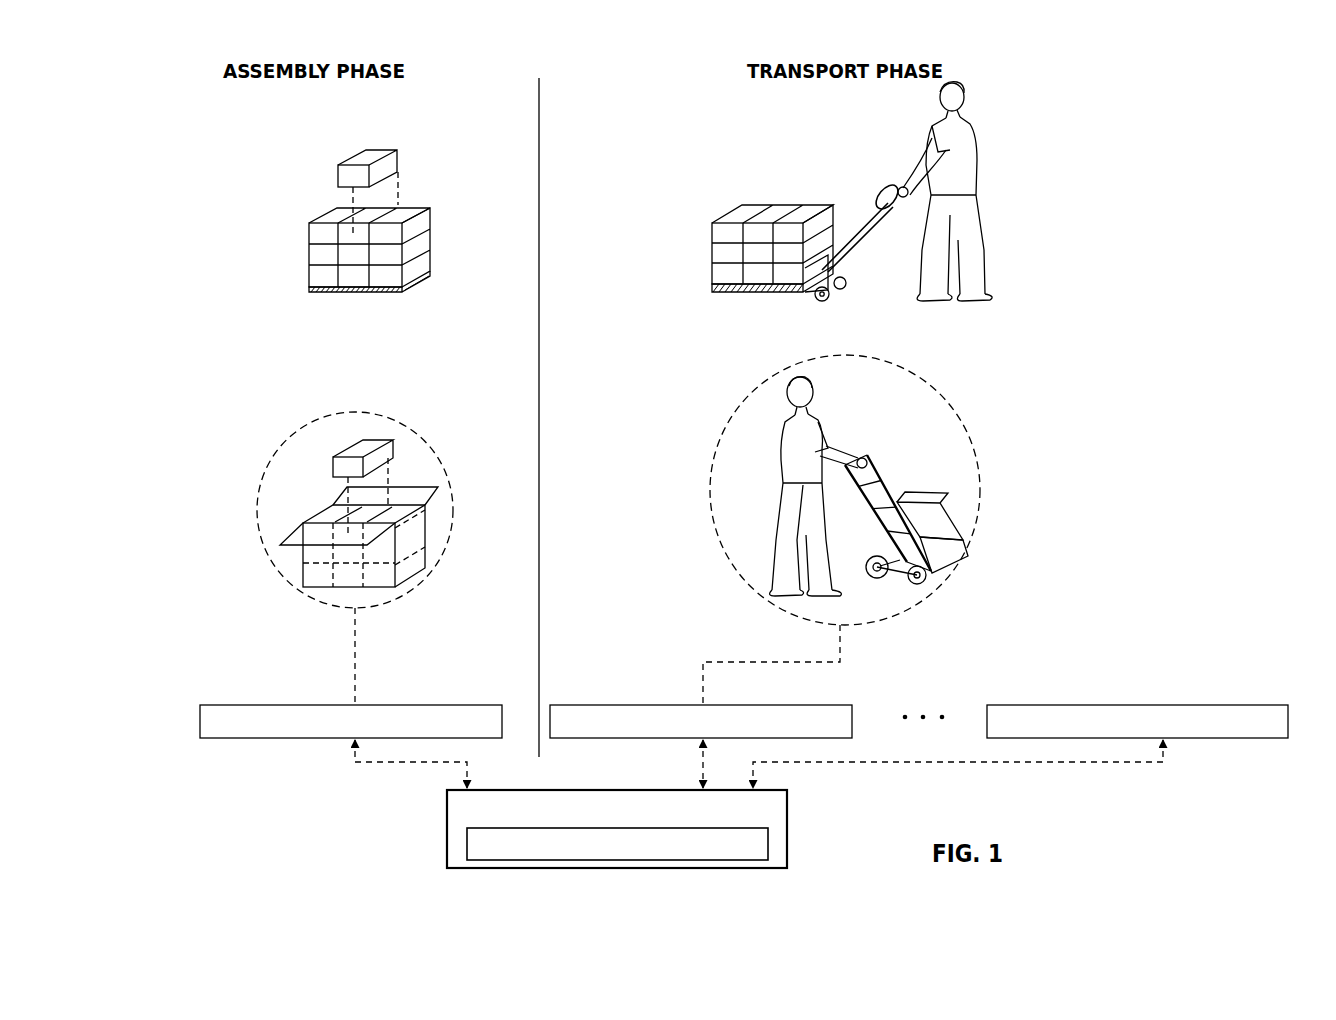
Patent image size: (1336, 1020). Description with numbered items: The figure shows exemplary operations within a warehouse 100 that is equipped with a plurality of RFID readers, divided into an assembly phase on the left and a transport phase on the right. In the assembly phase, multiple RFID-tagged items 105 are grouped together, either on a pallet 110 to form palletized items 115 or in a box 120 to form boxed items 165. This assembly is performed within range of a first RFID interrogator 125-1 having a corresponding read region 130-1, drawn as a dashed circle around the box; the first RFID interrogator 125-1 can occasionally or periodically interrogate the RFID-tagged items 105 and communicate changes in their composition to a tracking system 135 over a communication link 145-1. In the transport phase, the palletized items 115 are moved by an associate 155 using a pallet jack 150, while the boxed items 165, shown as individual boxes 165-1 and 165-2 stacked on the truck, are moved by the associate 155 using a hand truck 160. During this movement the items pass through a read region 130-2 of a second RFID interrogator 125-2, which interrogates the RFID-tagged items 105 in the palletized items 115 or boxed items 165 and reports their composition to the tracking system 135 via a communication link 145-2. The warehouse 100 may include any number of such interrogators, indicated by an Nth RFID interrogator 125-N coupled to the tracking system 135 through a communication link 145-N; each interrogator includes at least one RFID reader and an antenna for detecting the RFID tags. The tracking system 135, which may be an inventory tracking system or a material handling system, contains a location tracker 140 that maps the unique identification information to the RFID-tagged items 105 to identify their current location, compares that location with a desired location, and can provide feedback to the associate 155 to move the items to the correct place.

The warehouse 100 is at (1118, 86).
The RFID-tagged items 105 is at (263, 580).
The pallet 110 is at (372, 293).
The palletized items 115 is at (441, 207).
The box 120 is at (320, 588).
The first RFID interrogator 125-1 is at (490, 732).
The second RFID interrogator 125-2 is at (838, 732).
The RFID interrogator 125-N is at (1277, 732).
The read region 130-1 is at (420, 583).
The read region 130-2 is at (979, 492).
The tracking system 135 is at (778, 822).
The location tracker 140 is at (742, 857).
The communication link 145-1 is at (420, 765).
The communication link 145-2 is at (703, 755).
The communication link 145-N is at (1018, 763).
The pallet jack 150 is at (750, 297).
The associate 155 is at (987, 178).
The hand truck 160 is at (912, 589).
The boxed items 165 is at (461, 505).
The box 165-1 is at (922, 508).
The box 165-2 is at (952, 545).